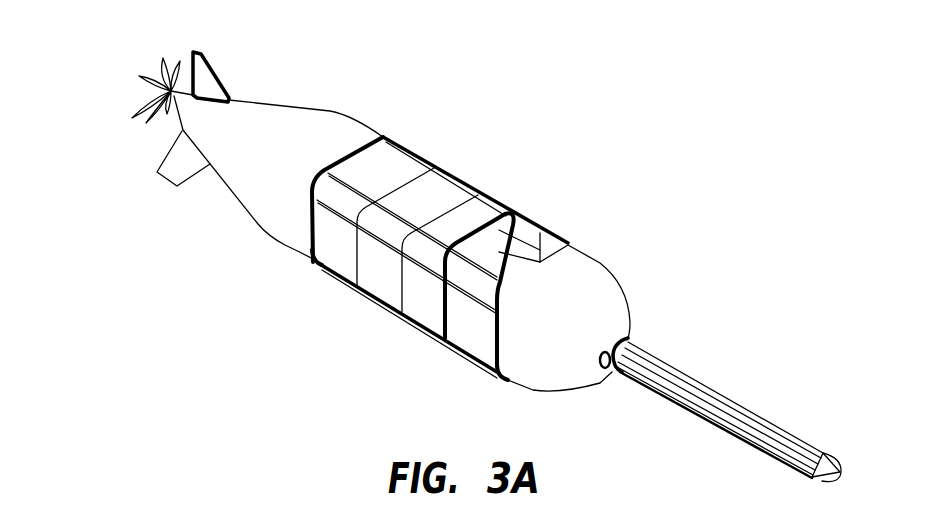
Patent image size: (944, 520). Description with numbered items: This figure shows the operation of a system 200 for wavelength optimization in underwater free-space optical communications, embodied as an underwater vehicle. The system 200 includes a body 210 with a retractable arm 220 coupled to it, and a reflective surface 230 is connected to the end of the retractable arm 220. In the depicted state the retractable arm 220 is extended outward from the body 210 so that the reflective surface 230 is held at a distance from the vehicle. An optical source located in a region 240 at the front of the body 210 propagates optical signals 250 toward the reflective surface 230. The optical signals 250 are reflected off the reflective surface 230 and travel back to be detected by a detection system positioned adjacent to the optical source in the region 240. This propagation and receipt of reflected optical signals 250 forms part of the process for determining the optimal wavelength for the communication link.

The system 200 is at (127, 60).
The body 210 is at (302, 118).
The retractable arm 220 is at (631, 378).
The reflective surface 230 is at (824, 453).
The region 240 is at (632, 336).
The optical signals 250 is at (733, 402).